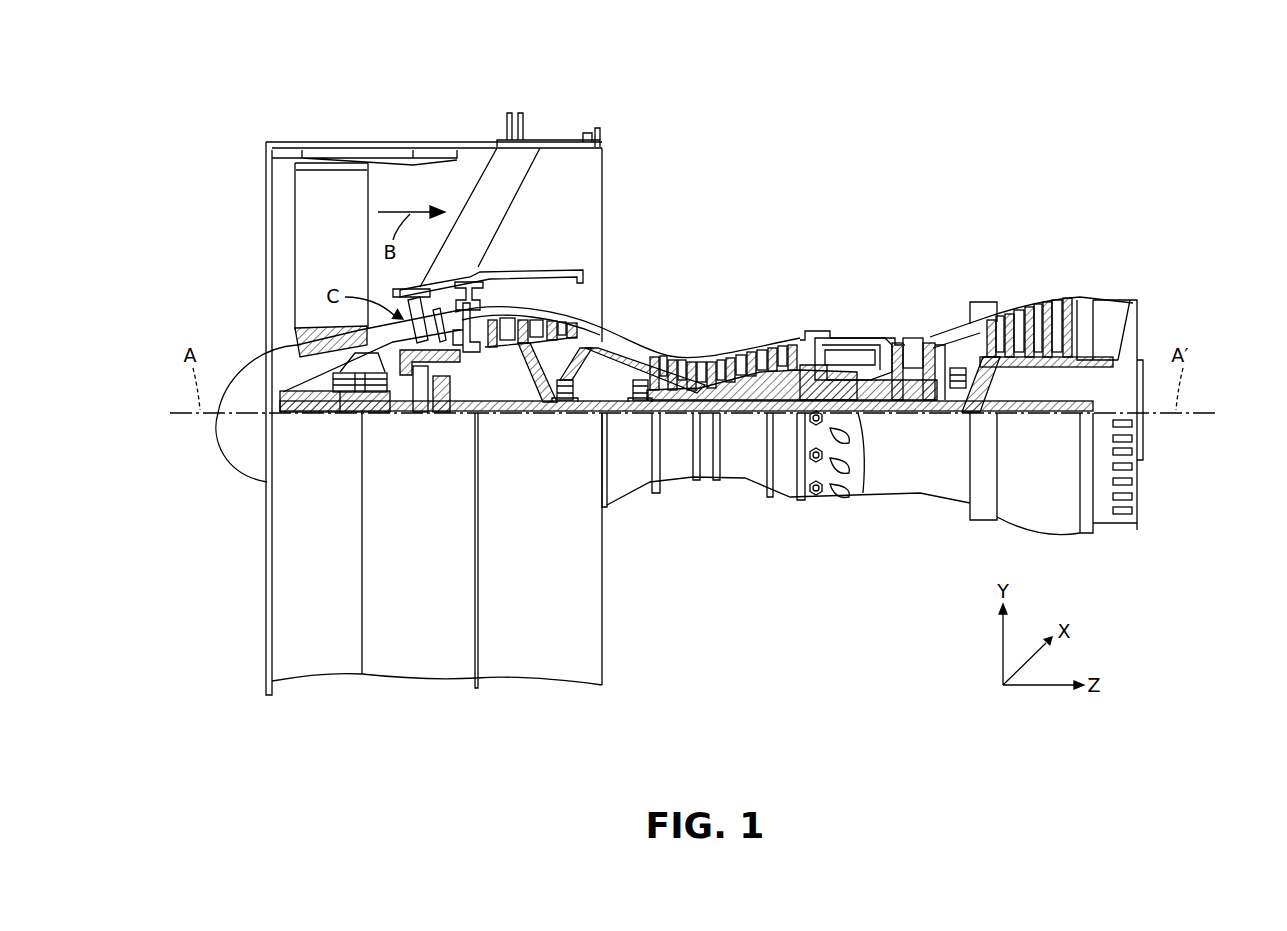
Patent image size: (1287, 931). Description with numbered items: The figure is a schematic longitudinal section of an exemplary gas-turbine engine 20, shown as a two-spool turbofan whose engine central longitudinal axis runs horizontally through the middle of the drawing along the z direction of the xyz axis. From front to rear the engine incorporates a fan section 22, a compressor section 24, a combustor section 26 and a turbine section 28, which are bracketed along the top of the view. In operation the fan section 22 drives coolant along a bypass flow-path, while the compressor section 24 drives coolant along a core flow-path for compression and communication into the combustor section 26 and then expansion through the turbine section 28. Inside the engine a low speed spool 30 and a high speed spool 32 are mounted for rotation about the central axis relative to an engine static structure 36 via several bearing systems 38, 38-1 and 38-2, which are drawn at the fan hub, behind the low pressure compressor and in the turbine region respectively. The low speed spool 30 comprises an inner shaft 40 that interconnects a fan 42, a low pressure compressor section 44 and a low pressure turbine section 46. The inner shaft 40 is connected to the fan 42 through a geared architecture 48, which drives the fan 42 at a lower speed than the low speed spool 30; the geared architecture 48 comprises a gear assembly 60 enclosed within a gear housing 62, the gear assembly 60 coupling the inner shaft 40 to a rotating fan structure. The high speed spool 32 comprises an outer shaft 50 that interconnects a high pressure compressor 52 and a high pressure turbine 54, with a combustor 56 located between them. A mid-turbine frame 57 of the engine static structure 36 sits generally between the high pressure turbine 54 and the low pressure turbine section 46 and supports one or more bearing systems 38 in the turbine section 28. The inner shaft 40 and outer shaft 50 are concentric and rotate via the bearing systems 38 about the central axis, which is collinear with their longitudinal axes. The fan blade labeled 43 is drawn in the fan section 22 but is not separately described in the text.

The gas-turbine engine 20 is at (891, 150).
The fan section 22 is at (455, 126).
The compressor section 24 is at (480, 239).
The combustor section 26 is at (897, 239).
The turbine section 28 is at (1085, 239).
The low speed spool 30 is at (748, 430).
The high speed spool 32 is at (792, 345).
The engine static structure 36 is at (416, 656).
The bearing system 38 is at (957, 400).
The bearing system 38-1 is at (337, 413).
The bearing system 38-2 is at (560, 413).
The inner shaft 40 is at (615, 415).
The fan 42 is at (310, 263).
The fan blade 43 is at (313, 205).
The low pressure compressor section 44 is at (548, 328).
The low pressure turbine section 46 is at (1028, 297).
The geared architecture 48 is at (434, 430).
The outer shaft 50 is at (857, 417).
The high pressure compressor 52 is at (752, 350).
The high pressure turbine 54 is at (910, 338).
The combustor 56 is at (855, 350).
The mid-turbine frame 57 is at (952, 352).
The gear assembly 60 is at (420, 413).
The gear housing 62 is at (446, 368).